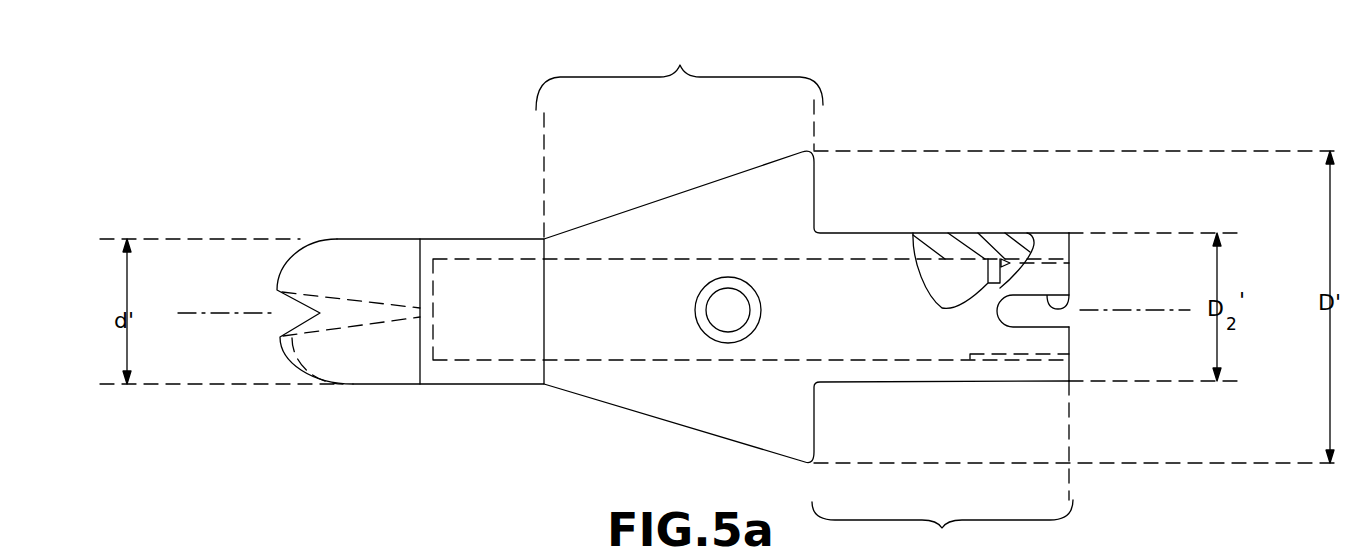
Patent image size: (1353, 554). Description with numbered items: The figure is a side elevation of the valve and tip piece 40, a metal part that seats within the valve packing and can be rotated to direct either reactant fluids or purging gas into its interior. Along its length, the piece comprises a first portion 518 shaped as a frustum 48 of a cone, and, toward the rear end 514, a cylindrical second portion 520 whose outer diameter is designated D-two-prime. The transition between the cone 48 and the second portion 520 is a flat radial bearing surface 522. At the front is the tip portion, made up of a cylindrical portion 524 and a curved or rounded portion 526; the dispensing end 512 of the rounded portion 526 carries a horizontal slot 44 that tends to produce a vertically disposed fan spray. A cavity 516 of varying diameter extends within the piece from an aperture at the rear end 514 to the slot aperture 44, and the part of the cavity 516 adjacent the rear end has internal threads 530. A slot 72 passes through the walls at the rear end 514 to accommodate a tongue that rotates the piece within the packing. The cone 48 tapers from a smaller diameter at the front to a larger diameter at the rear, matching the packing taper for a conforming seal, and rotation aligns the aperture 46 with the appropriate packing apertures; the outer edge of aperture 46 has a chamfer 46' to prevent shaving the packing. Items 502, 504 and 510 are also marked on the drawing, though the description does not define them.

The valve and tip piece 40 is at (563, 546).
The horizontal slot 44 is at (278, 289).
The aperture 46 is at (719, 286).
The chamfer 46' is at (676, 310).
The frustum of a cone 48 is at (745, 190).
The slot 72 is at (1070, 300).
The centerline axis 502 is at (244, 320).
The bore wall 504 is at (727, 312).
The lower tapered surface 510 is at (623, 393).
The front or dispensing end 512 is at (402, 184).
The rear end 514 is at (1112, 146).
The cavity 516 is at (927, 272).
The first portion 518 is at (679, 139).
The second portion 520 is at (942, 527).
The flat radial bearing surface 522 is at (815, 195).
The cylindrical portion 524 is at (512, 218).
The curved or rounded portion 526 is at (352, 258).
The internal threads 530 is at (1005, 250).